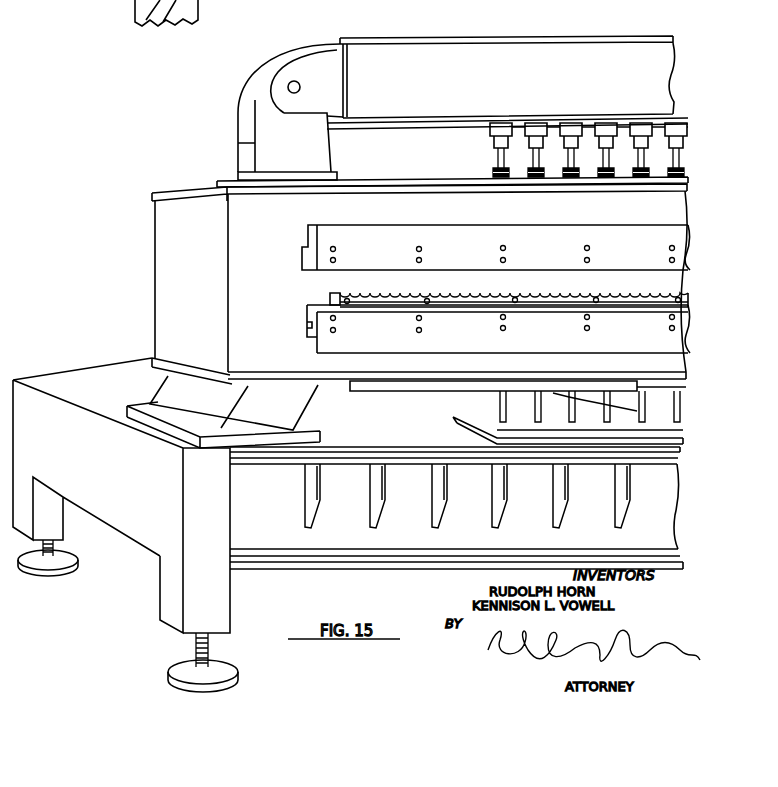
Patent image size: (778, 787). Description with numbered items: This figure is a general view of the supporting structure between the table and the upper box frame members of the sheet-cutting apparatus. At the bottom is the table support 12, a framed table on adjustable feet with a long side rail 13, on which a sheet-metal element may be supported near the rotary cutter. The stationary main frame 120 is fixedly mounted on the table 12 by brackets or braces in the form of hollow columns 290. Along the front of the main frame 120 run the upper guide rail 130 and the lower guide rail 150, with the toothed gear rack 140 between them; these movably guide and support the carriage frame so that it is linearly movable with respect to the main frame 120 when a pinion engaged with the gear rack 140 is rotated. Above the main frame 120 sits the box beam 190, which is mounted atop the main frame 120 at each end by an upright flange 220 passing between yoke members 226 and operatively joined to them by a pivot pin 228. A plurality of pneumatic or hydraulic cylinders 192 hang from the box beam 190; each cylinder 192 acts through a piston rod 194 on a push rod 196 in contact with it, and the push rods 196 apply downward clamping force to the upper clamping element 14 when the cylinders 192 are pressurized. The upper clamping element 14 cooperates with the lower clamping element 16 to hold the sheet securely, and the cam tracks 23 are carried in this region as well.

The table support 12 is at (80, 383).
The rail 13 is at (327, 538).
The upper clamping element 14 is at (456, 421).
The lower clamping element 16 is at (414, 457).
The cam tracks 23 is at (395, 390).
The stationary main frame 120 is at (153, 229).
The upper guide rail 130 is at (423, 233).
The gear rack 140 is at (337, 295).
The lower guide rail 150 is at (430, 337).
The box beam 190 is at (575, 50).
The pneumatic or hydraulic cylinders 192 is at (503, 123).
The piston rod 194 is at (499, 157).
The push rod 196 is at (499, 402).
The upright flange 220 is at (321, 148).
The yoke members 226 is at (333, 67).
The pivot pin 228 is at (293, 93).
The hollow columns 290 is at (160, 388).